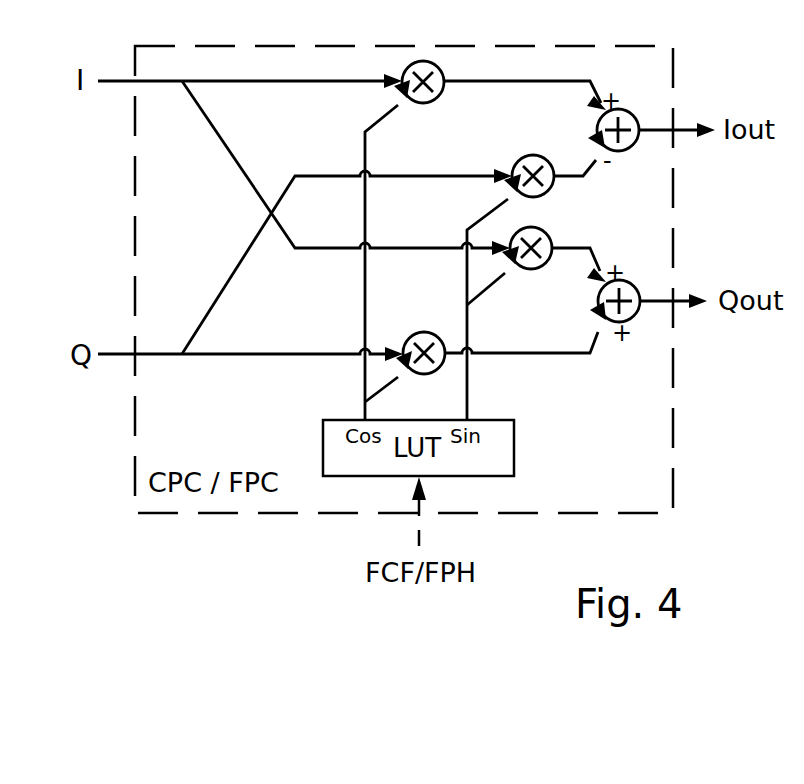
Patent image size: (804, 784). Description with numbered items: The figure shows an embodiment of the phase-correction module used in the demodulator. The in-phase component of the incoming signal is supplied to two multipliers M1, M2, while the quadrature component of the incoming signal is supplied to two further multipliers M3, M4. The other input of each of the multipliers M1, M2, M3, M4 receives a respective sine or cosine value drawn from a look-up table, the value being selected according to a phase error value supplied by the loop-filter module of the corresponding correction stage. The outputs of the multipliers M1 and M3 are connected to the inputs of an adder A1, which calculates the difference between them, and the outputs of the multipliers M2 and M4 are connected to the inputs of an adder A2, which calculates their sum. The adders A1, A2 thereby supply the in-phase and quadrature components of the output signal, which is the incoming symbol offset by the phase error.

The multiplier M1 is at (428, 60).
The multiplier M2 is at (542, 270).
The multiplier M3 is at (532, 153).
The multiplier M4 is at (422, 329).
The adder A1 is at (628, 108).
The adder A2 is at (632, 288).